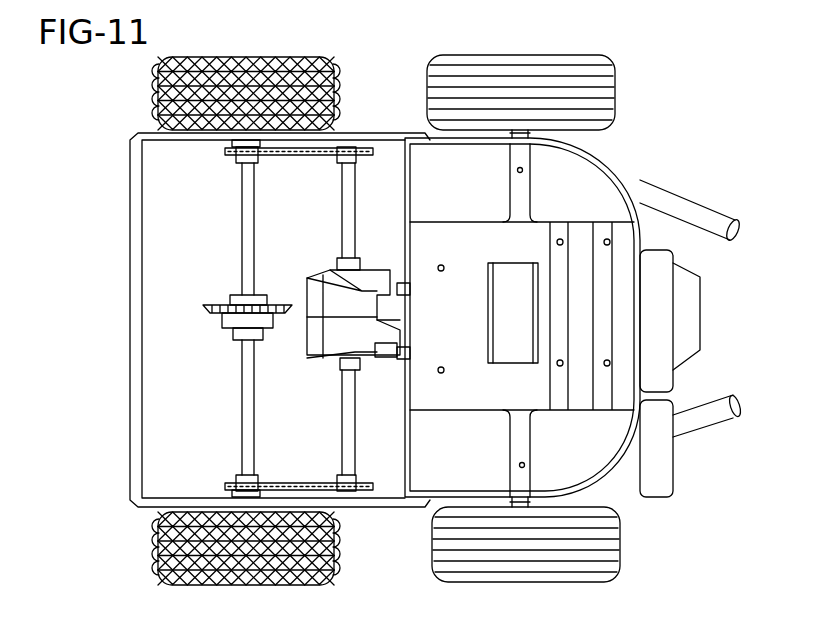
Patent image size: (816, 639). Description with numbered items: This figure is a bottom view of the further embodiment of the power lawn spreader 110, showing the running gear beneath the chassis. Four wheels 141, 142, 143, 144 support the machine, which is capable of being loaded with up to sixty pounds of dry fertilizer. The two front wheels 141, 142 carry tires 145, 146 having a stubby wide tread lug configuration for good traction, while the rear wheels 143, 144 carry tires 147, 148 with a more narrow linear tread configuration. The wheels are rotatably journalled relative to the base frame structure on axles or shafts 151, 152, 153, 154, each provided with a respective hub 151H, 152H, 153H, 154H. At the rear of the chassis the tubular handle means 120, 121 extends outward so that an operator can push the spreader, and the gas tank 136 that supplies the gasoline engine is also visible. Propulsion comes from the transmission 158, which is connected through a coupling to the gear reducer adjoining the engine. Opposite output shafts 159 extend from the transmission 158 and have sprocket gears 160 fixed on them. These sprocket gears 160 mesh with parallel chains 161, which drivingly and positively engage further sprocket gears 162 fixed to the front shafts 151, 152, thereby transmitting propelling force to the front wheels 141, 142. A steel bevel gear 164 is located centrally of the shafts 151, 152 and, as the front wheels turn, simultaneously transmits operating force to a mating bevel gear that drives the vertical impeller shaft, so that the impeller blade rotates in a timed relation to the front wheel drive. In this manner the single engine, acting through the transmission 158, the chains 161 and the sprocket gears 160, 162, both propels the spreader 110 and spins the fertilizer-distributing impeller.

The power lawn spreader 110 is at (672, 125).
The tubular handle means 120 is at (675, 205).
The tubular handle means 121 is at (716, 420).
The gas tank 136 is at (665, 475).
The front wheel 141 is at (248, 57).
The front wheel 142 is at (247, 584).
The rear wheel 143 is at (525, 55).
The rear wheel 144 is at (526, 583).
The tire 145 is at (158, 80).
The tire 146 is at (160, 538).
The tire 147 is at (613, 85).
The tire 148 is at (618, 545).
The shaft 151 is at (241, 205).
The hub 151H is at (236, 143).
The shaft 152 is at (242, 402).
The hub 152H is at (238, 492).
The shaft 153 is at (513, 189).
The hub 153H is at (532, 137).
The shaft 154 is at (515, 432).
The hub 154H is at (519, 505).
The transmission 158 is at (360, 346).
The output shaft 159 is at (341, 226).
The sprocket gear 160 is at (338, 159).
The chain 161 is at (284, 156).
The sprocket gear 162 is at (233, 160).
The bevel gear 164 is at (213, 303).